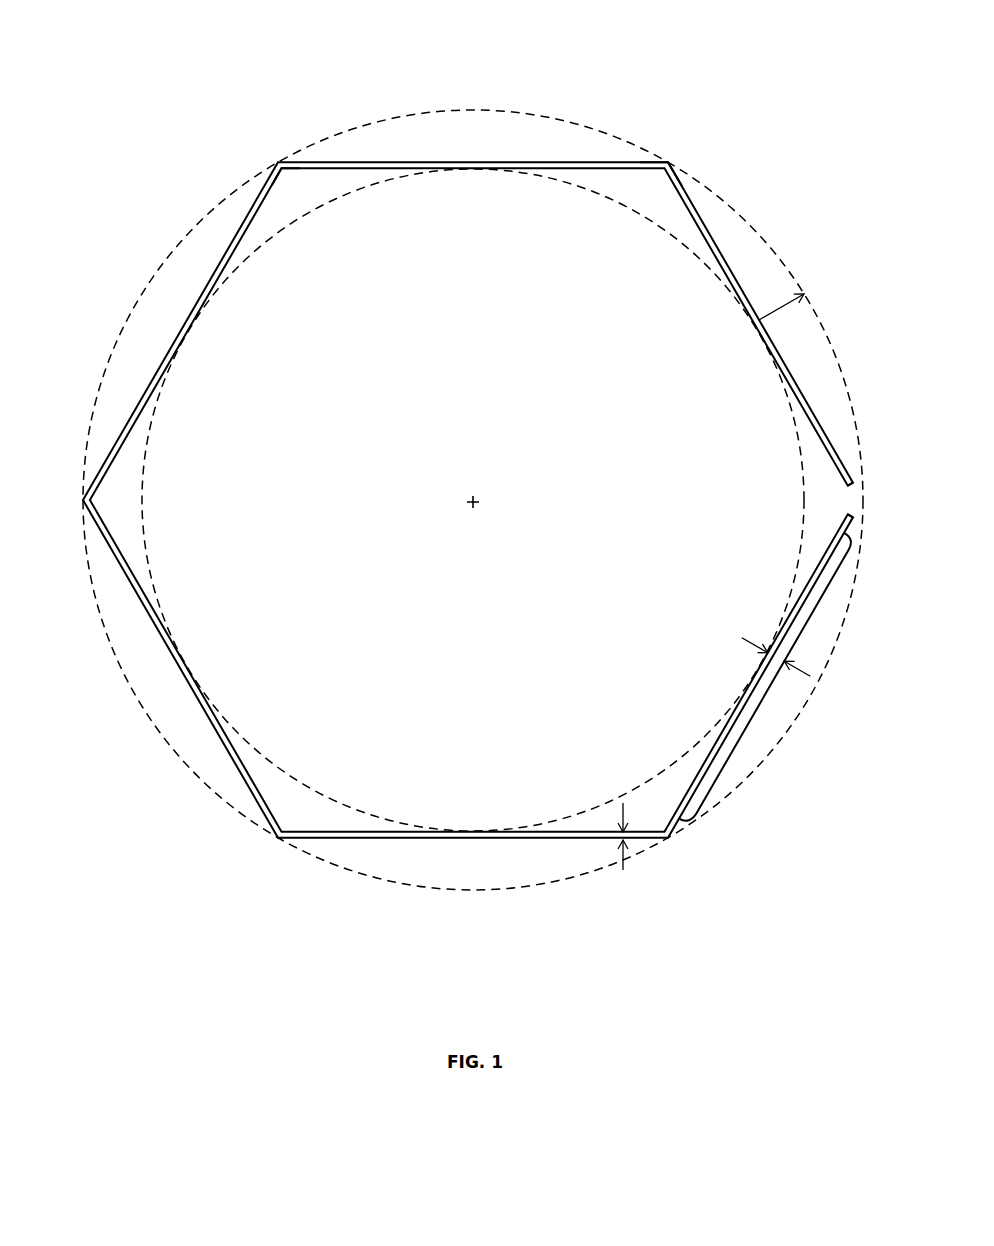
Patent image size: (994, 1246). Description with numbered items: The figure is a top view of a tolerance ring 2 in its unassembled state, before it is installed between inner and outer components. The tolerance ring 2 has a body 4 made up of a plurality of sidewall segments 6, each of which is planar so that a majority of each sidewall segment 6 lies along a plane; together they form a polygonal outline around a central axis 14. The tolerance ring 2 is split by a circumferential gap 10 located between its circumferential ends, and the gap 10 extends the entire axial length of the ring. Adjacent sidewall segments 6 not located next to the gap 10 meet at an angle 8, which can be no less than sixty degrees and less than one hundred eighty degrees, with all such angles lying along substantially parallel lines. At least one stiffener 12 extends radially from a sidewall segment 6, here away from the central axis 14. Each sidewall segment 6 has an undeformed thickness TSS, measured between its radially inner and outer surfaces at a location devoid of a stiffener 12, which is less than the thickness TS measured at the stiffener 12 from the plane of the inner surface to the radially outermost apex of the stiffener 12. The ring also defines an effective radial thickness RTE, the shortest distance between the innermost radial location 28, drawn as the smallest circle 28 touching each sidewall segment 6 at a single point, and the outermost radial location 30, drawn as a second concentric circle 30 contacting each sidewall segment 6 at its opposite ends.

The tolerance ring 2 is at (703, 75).
The body 4 is at (684, 186).
The sidewall segments 6 is at (615, 162).
The angle 8 is at (274, 186).
The circumferential gap 10 is at (867, 500).
The stiffener 12 is at (754, 714).
The central axis 14 is at (485, 511).
The innermost radial location (smallest circle) 28 is at (803, 463).
The outermost radial location (second concentric circle) 30 is at (842, 368).
The effective radial thickness RTE is at (783, 306).
The thickness at the stiffener TS is at (812, 677).
The undeformed thickness TSS is at (627, 858).